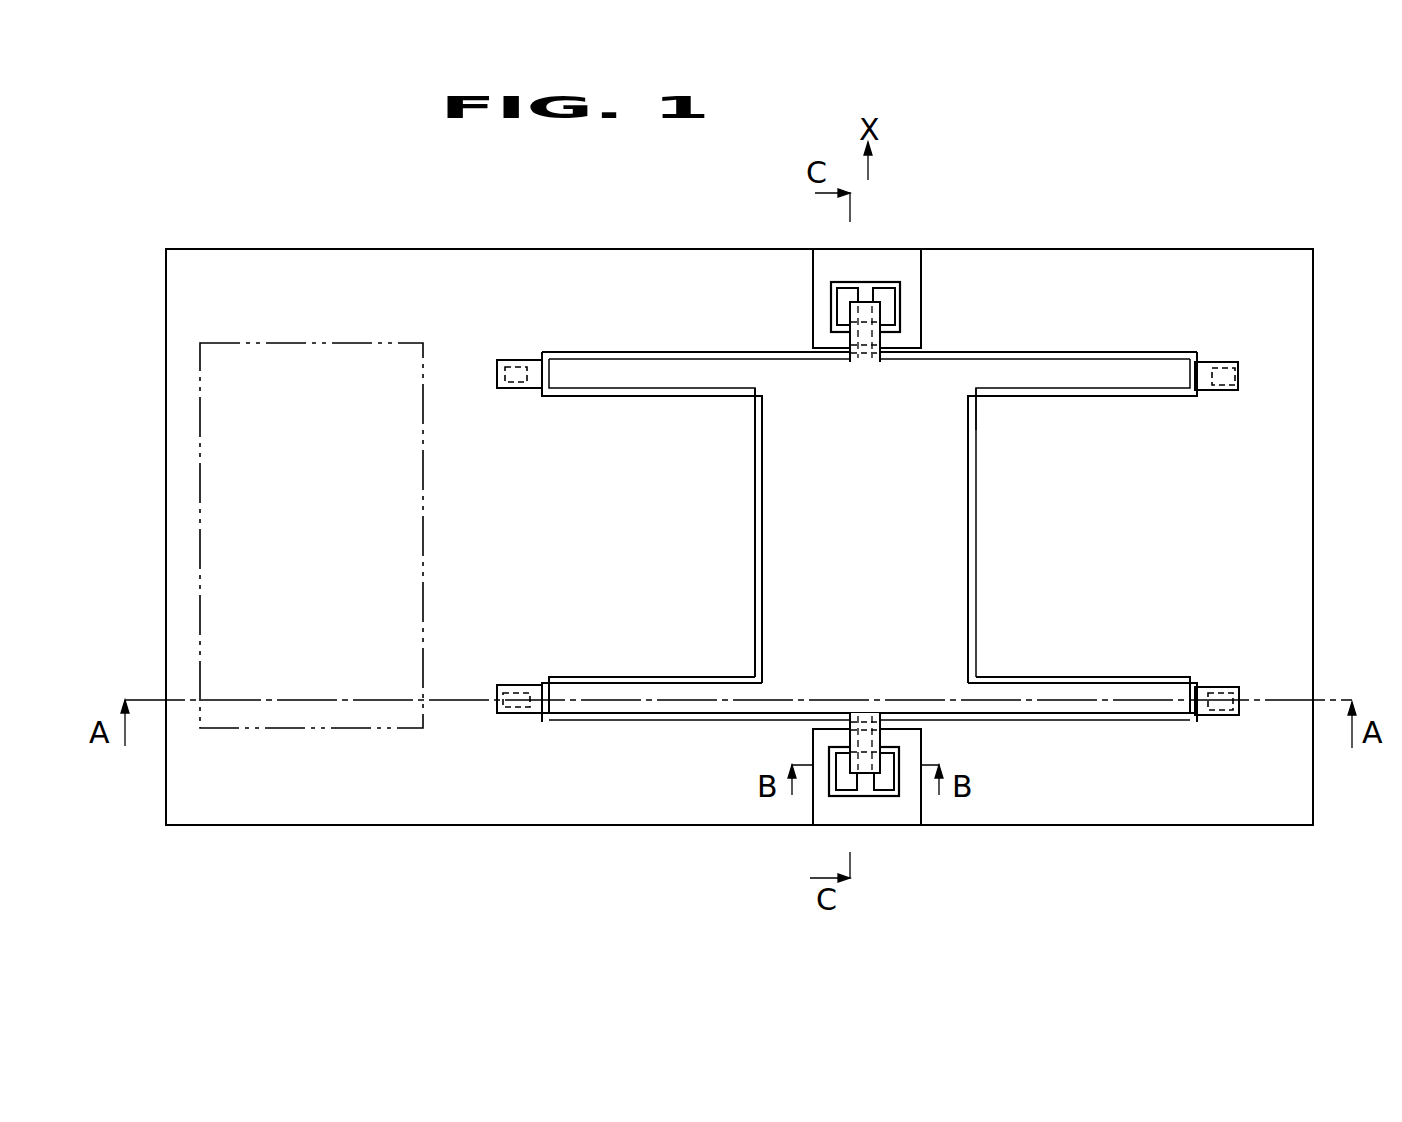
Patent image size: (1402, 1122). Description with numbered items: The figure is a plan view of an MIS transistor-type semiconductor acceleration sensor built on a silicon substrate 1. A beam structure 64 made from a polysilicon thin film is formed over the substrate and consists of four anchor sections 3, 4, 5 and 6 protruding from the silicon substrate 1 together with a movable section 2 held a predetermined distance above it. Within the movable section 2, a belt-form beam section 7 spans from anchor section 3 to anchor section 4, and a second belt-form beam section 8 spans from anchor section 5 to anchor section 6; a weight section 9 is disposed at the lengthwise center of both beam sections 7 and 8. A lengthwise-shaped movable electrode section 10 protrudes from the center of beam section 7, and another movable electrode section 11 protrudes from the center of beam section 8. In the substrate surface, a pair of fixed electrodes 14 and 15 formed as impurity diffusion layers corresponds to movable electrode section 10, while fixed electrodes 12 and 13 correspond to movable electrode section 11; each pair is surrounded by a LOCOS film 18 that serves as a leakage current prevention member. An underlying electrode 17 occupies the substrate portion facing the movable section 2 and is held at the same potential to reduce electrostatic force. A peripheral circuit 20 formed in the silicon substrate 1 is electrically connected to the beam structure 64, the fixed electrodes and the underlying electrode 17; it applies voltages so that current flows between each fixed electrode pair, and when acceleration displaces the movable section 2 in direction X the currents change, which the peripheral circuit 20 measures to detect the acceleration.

The silicon substrate 1 is at (1313, 794).
The movable section 2 is at (869, 496).
The anchor section 3 is at (514, 360).
The anchor section 4 is at (1220, 361).
The anchor section 5 is at (510, 714).
The anchor section 6 is at (1222, 715).
The beam section 7 is at (1105, 372).
The beam section 8 is at (1112, 692).
The weight section 9 is at (957, 586).
The movable electrode section 10 is at (860, 297).
The movable electrode section 11 is at (865, 778).
The fixed electrode 12 is at (842, 786).
The fixed electrode 13 is at (887, 788).
The fixed electrode 14 is at (845, 296).
The fixed electrode 15 is at (888, 310).
The underlying electrode 17 is at (976, 641).
The LOCOS film 18 is at (912, 286).
The peripheral circuit 20 is at (424, 553).
The beam structure 64 is at (1043, 350).